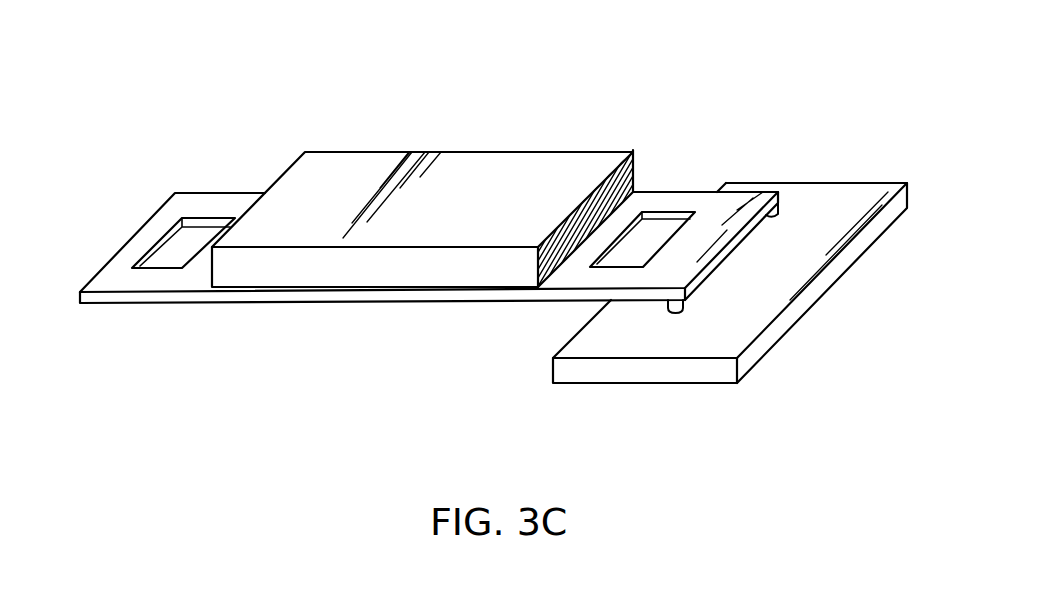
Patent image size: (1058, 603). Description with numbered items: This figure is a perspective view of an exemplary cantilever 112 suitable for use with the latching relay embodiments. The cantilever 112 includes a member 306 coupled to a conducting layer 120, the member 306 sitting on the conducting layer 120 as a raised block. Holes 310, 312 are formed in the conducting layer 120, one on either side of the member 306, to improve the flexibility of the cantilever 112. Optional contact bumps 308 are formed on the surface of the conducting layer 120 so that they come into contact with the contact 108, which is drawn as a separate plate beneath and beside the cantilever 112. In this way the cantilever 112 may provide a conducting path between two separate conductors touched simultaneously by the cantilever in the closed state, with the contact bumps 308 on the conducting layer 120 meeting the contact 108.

The cantilever 112 is at (488, 191).
The conducting layer 120 is at (197, 282).
The member 306 is at (545, 187).
The contact bumps 308 is at (688, 303).
The hole 310 is at (648, 233).
The hole 312 is at (197, 233).
The contact 108 is at (740, 343).